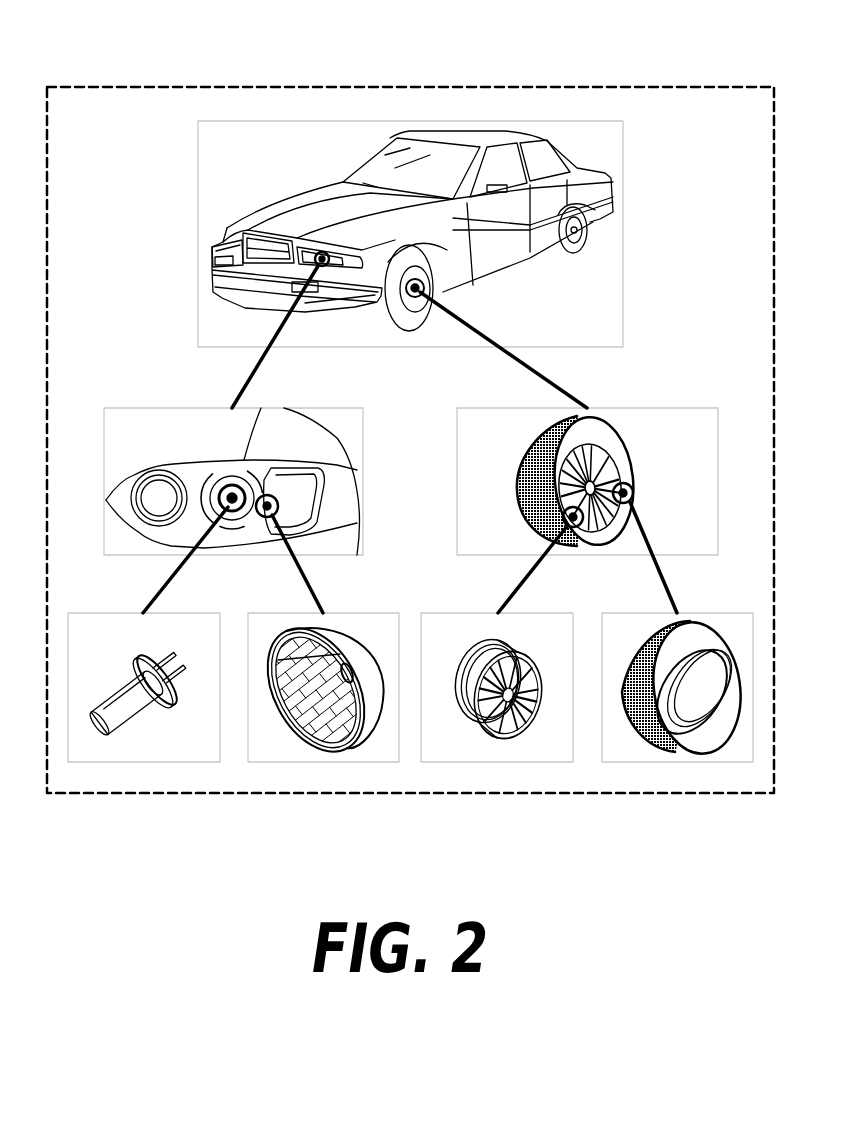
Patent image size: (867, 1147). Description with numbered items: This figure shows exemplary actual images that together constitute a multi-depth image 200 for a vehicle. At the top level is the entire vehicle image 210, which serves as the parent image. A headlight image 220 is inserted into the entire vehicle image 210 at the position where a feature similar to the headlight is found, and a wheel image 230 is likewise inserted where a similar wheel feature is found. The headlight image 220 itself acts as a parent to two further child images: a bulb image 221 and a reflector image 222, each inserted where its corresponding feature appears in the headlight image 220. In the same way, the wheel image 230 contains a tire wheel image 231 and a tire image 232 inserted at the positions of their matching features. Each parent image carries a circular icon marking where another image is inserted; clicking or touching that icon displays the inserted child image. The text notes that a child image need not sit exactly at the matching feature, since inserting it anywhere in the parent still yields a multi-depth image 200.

The multi-depth image 200 is at (158, 52).
The entire vehicle image 210 is at (623, 167).
The headlight image 220 is at (168, 408).
The bulb image 221 is at (93, 613).
The reflector image 222 is at (364, 613).
The wheel image 230 is at (637, 408).
The tire wheel image 231 is at (455, 613).
The tire image 232 is at (722, 613).